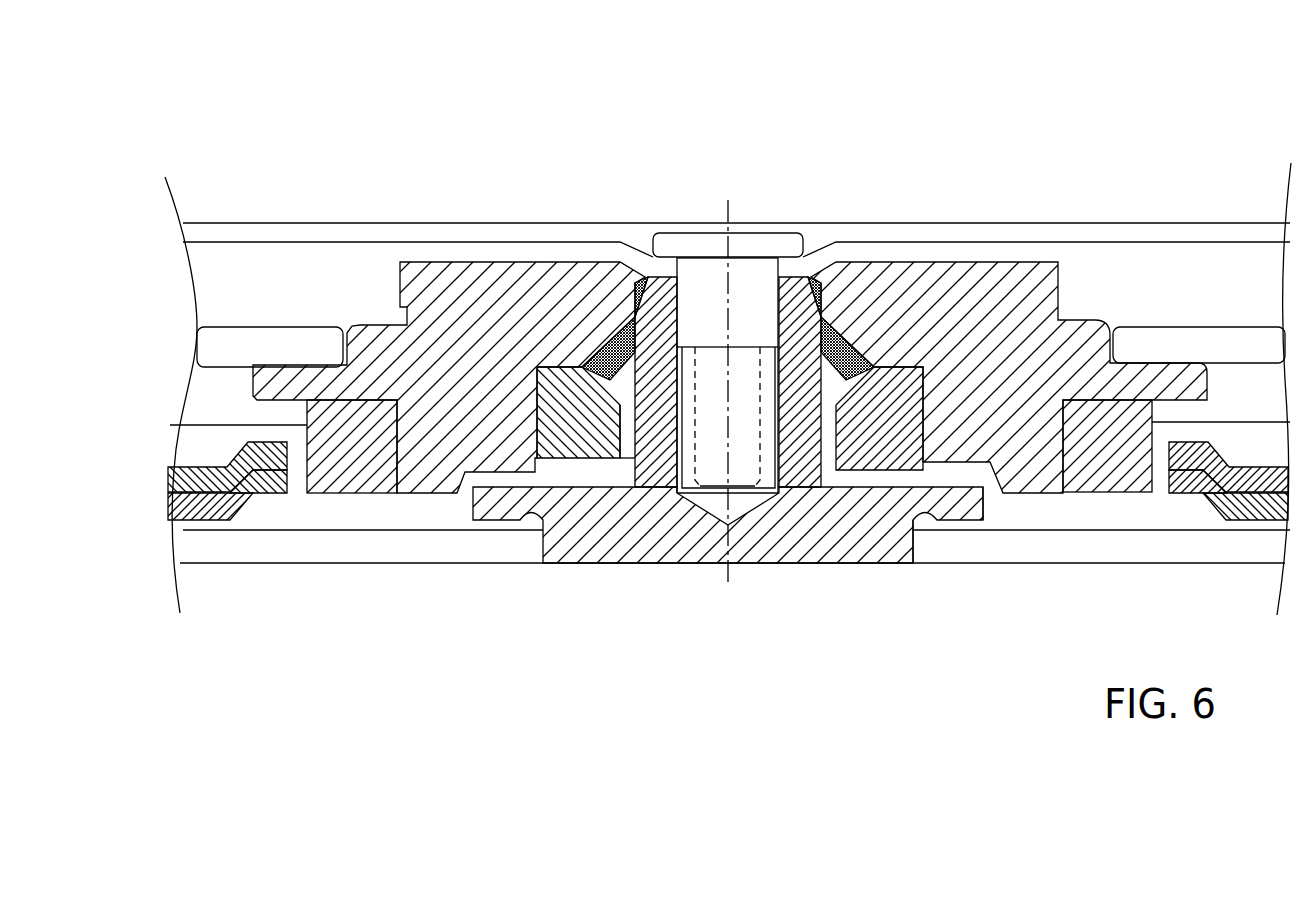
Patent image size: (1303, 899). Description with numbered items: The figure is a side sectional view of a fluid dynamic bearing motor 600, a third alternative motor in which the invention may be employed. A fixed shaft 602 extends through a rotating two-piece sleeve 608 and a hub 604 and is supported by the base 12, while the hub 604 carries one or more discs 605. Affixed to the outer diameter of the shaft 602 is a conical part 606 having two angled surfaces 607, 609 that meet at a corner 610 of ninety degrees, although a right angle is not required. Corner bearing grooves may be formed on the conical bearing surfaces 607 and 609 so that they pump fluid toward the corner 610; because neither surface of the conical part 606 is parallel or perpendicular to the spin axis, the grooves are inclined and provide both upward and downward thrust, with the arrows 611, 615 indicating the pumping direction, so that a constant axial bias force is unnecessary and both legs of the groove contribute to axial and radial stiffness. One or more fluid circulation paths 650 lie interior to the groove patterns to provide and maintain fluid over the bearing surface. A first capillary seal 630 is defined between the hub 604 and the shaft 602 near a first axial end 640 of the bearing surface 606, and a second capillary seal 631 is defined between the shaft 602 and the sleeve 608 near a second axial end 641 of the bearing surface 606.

The base 12 is at (408, 550).
The fluid dynamic bearing motor 600 is at (290, 112).
The fixed shaft 602 is at (795, 310).
The hub 604 is at (510, 310).
The discs 605 is at (243, 348).
The conical part 606 is at (602, 400).
The angled surface 607 is at (600, 335).
The two-piece sleeve 608 is at (568, 425).
The angled surface 609 is at (627, 430).
The corner 610 is at (600, 355).
The arrow 611 is at (912, 478).
The arrow 615 is at (975, 500).
The first capillary seal 630 is at (810, 315).
The second capillary seal 631 is at (855, 455).
The first axial end 640 is at (845, 332).
The second axial end 641 is at (700, 472).
The fluid circulation path 650 is at (810, 445).